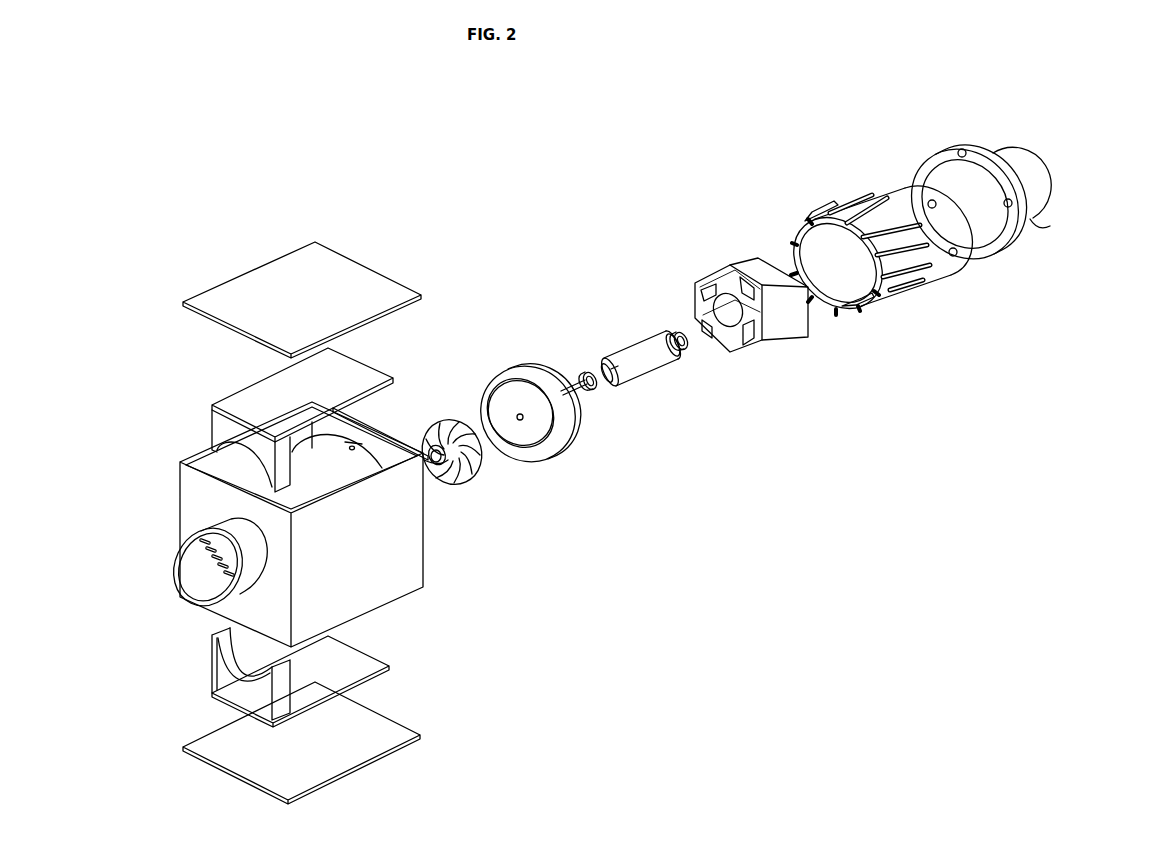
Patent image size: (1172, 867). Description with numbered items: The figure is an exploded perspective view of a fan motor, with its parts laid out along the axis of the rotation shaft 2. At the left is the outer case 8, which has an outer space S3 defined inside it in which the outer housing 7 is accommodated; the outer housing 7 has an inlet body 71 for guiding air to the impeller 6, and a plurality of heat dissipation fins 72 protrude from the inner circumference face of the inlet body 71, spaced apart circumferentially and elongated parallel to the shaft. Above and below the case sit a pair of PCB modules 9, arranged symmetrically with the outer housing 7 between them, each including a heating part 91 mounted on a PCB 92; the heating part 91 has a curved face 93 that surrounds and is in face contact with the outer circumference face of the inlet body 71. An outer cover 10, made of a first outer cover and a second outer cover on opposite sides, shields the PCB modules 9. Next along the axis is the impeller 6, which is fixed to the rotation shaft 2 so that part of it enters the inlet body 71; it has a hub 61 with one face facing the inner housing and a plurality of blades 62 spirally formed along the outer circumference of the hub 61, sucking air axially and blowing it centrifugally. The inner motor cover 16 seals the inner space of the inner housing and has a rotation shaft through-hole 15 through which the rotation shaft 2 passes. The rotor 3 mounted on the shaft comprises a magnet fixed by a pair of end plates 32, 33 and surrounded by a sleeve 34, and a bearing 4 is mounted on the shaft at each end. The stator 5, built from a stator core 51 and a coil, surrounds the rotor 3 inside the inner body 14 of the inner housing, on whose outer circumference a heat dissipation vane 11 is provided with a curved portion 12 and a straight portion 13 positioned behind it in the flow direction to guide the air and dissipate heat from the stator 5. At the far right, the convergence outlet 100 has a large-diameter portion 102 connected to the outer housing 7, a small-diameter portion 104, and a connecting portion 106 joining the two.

The outer cover 10 is at (252, 283).
The outer case 8 is at (423, 567).
The inlet body 71 is at (205, 567).
The heat dissipation fin 72 is at (203, 552).
The PCB module 9 is at (252, 537).
The heating part 91 is at (212, 421).
The PCB 92 is at (211, 404).
The curved face 93 is at (270, 557).
The outer space S3 is at (354, 438).
The outer housing 7 is at (403, 437).
The impeller 6 is at (454, 480).
The hub 61 is at (479, 479).
The blades 62 is at (456, 479).
The rotation shaft through-hole 15 is at (519, 412).
The inner motor cover 16 is at (527, 415).
The rotor 3 is at (630, 370).
The end plate 32 is at (609, 386).
The end plate 33 is at (675, 360).
The sleeve 34 is at (637, 376).
The rotation shaft 2 is at (668, 334).
The bearing 4 is at (589, 372).
The stator 5 is at (770, 329).
The stator core 51 is at (800, 345).
The heat dissipation vane 11 is at (874, 232).
The curved portion 12 is at (866, 156).
The straight portion 13 is at (862, 200).
The inner body 14 is at (947, 264).
The convergence outlet 100 is at (1011, 203).
The large-diameter portion 102 is at (1020, 240).
The small-diameter portion 104 is at (1043, 182).
The connecting portion 106 is at (1033, 215).